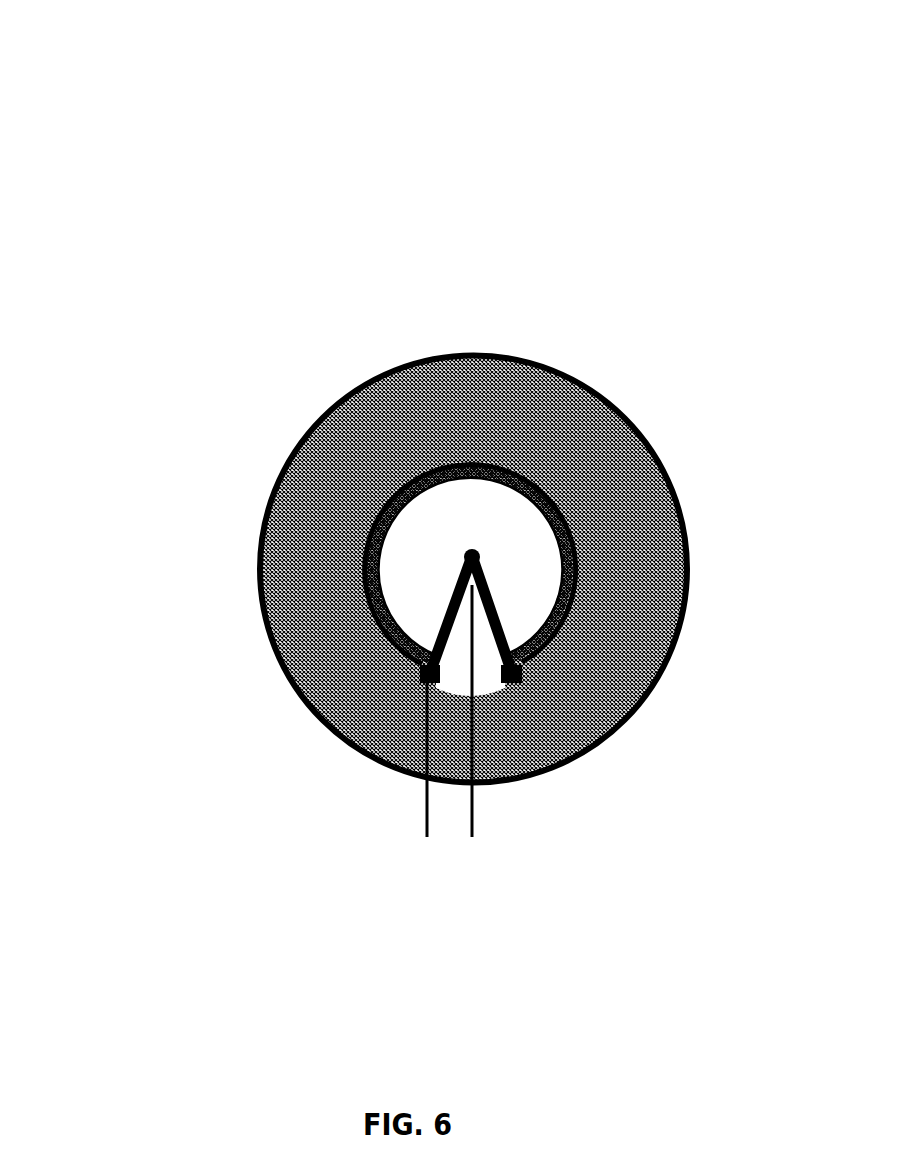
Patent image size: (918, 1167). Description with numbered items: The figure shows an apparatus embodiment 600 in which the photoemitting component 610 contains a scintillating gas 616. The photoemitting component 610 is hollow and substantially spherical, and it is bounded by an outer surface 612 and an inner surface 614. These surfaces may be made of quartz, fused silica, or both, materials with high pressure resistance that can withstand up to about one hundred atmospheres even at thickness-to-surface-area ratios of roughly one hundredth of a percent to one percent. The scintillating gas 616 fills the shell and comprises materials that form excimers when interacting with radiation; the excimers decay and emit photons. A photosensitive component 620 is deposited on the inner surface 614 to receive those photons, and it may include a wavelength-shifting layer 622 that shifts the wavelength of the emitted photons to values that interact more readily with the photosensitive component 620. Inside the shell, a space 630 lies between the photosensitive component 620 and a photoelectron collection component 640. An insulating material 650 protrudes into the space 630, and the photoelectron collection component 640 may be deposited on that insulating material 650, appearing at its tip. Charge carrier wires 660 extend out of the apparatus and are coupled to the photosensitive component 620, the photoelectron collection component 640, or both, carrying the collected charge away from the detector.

The apparatus embodiment 600 is at (91, 90).
The photoemitting component 610 is at (383, 342).
The outer surface 612 is at (257, 550).
The inner surface 614 is at (377, 508).
The scintillating gas 616 is at (323, 635).
The photosensitive component 620 is at (548, 495).
The wavelength-shifting layer 622 is at (495, 467).
The space 630 is at (488, 523).
The photoelectron collection component 640 is at (478, 560).
The insulating material 650 is at (612, 608).
The charge carrier wires 660 is at (422, 803).